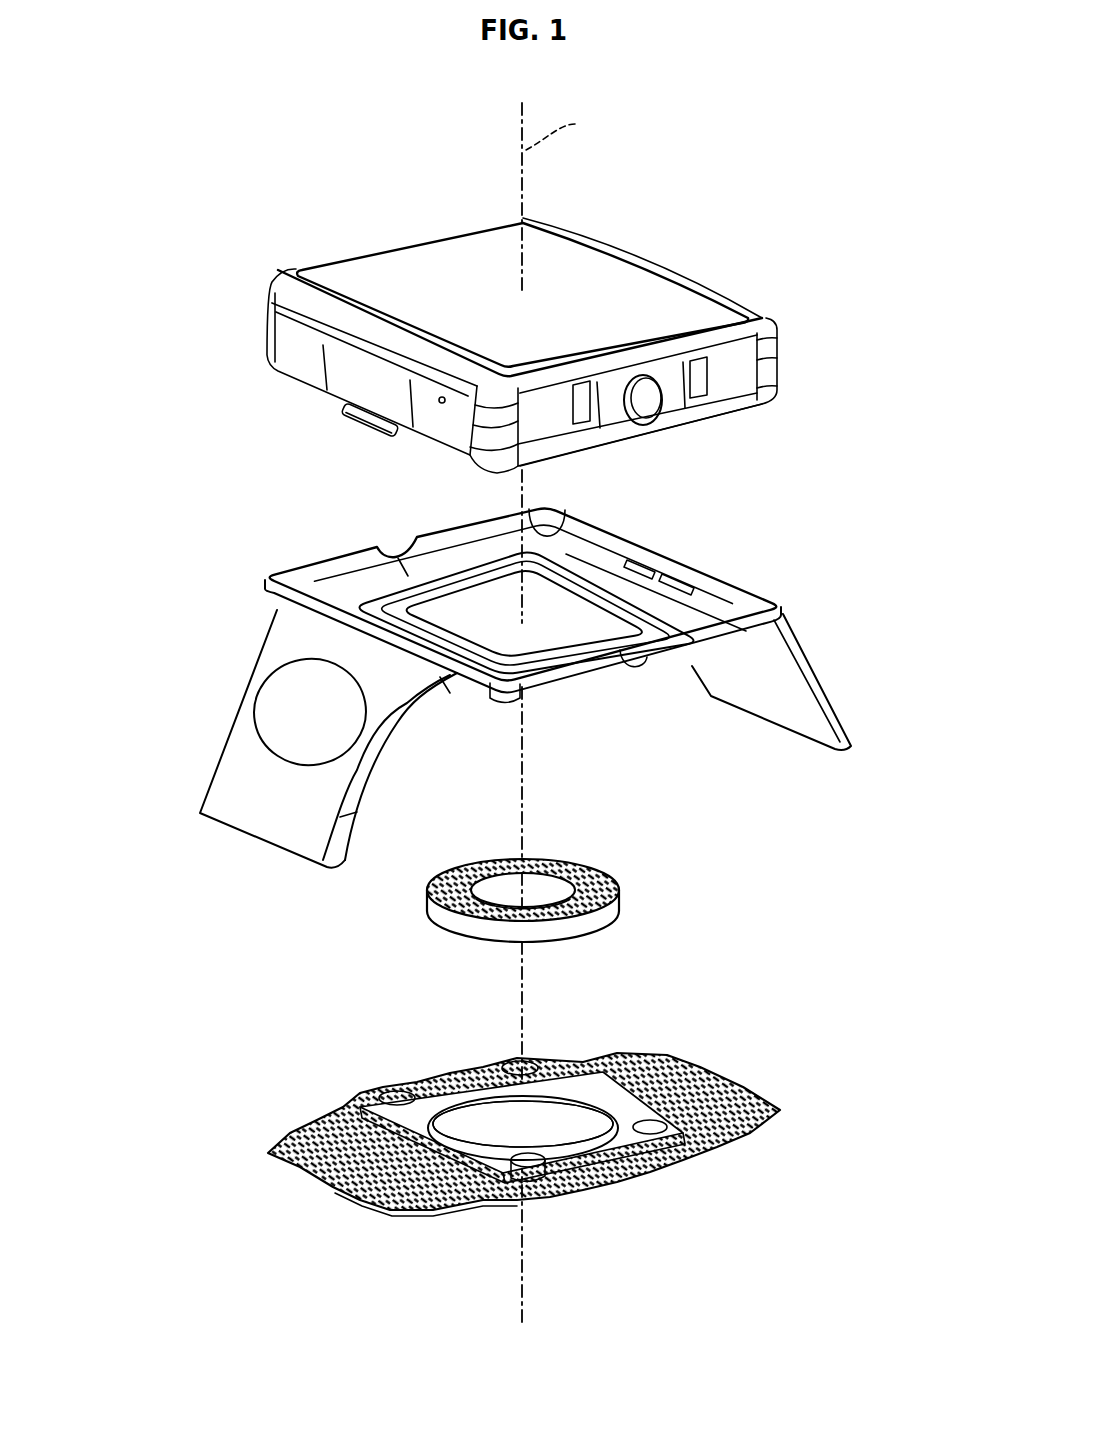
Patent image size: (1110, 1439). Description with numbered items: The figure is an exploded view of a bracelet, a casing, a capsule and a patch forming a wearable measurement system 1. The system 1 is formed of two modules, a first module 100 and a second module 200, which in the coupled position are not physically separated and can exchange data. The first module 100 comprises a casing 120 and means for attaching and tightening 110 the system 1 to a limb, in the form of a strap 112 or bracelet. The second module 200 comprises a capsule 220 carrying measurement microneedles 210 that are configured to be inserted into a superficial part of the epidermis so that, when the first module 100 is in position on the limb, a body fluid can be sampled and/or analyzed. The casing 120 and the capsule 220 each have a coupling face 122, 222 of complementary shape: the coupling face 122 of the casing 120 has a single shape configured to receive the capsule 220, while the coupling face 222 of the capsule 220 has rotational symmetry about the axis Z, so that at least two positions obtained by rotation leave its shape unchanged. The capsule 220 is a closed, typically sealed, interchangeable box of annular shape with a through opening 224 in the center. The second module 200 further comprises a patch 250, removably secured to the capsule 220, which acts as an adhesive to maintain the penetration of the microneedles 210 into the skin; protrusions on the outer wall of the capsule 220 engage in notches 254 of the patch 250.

The system 1 is at (80, 299).
The first module 100 is at (898, 299).
The means for attaching and tightening 110 is at (812, 686).
The strap 112 is at (296, 811).
The casing 120 is at (762, 328).
The coupling face 122 is at (314, 410).
The second module 200 is at (898, 807).
The measurement microneedles 210 is at (496, 951).
The capsule 220 is at (602, 856).
The coupling face 222 is at (605, 890).
The through opening 224 is at (537, 893).
The patch 250 is at (780, 1110).
The notches 254 is at (492, 1095).